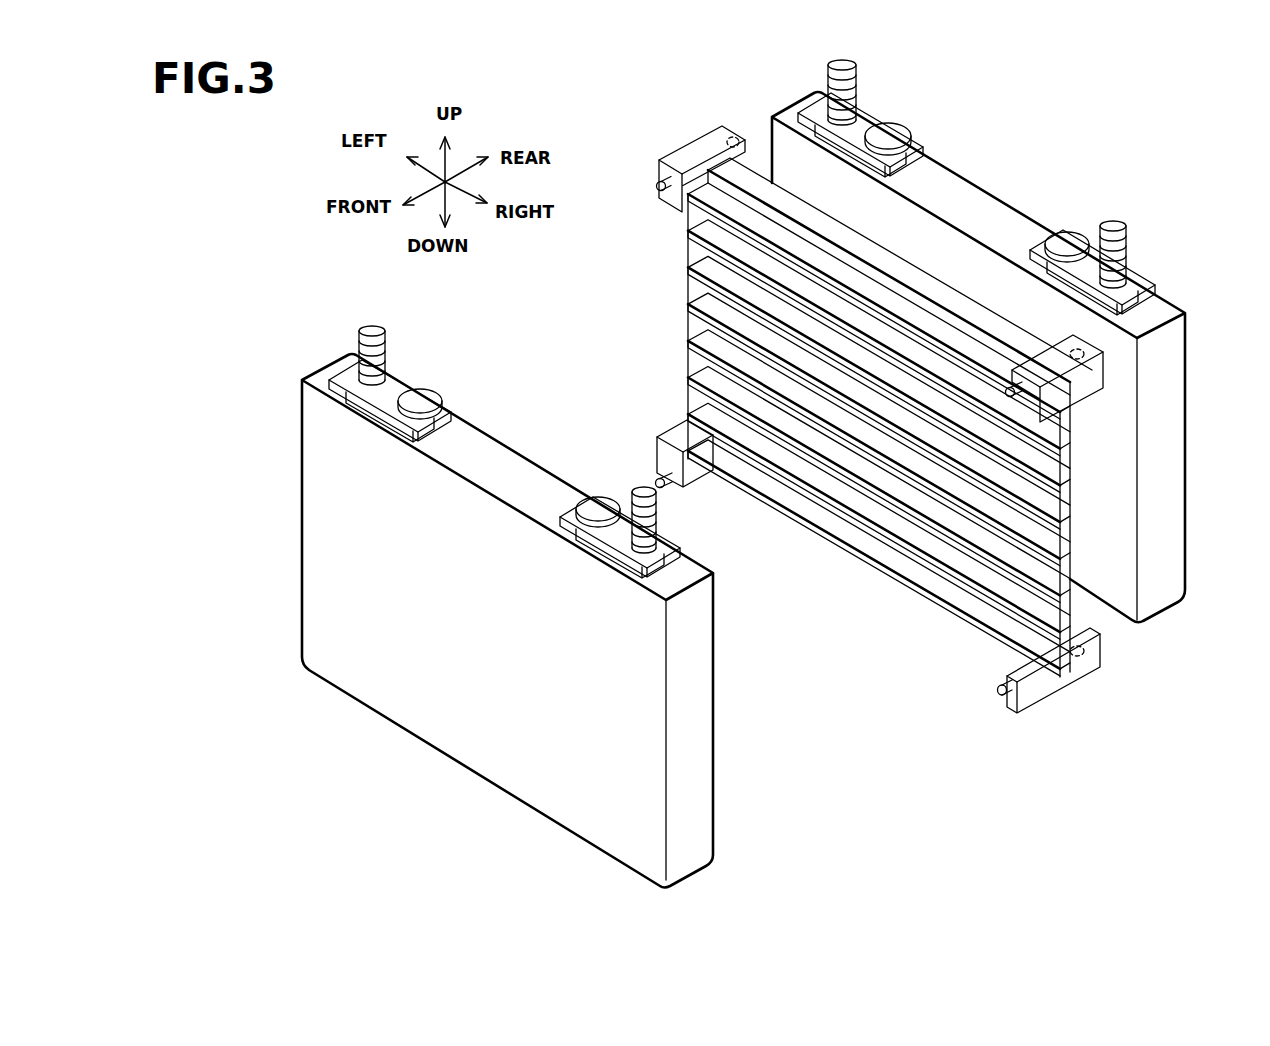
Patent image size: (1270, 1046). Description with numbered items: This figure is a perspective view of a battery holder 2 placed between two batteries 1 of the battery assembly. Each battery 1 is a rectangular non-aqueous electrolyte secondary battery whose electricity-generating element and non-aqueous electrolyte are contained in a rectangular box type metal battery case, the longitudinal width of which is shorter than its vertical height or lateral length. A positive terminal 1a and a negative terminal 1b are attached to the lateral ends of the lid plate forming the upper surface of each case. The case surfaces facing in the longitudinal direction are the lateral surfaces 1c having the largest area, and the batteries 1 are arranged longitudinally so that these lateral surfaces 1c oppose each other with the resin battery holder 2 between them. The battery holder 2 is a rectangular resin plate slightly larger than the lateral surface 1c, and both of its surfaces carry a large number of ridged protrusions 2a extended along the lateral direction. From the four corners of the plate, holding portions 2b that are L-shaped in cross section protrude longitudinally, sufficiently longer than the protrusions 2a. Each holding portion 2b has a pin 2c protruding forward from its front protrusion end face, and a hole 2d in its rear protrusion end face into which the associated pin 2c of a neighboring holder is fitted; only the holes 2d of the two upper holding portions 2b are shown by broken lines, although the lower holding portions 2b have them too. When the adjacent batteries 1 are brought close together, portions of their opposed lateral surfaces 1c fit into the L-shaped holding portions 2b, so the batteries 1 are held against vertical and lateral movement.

The battery 1 is at (727, 474).
The positive terminal 1a is at (640, 492).
The negative terminal 1b is at (370, 332).
The lateral surface 1c is at (477, 688).
The battery holder 2 is at (879, 425).
The ridged protrusion 2a is at (853, 517).
The holding portion 2b is at (888, 425).
The pin 2c is at (660, 182).
The hole 2d is at (728, 133).